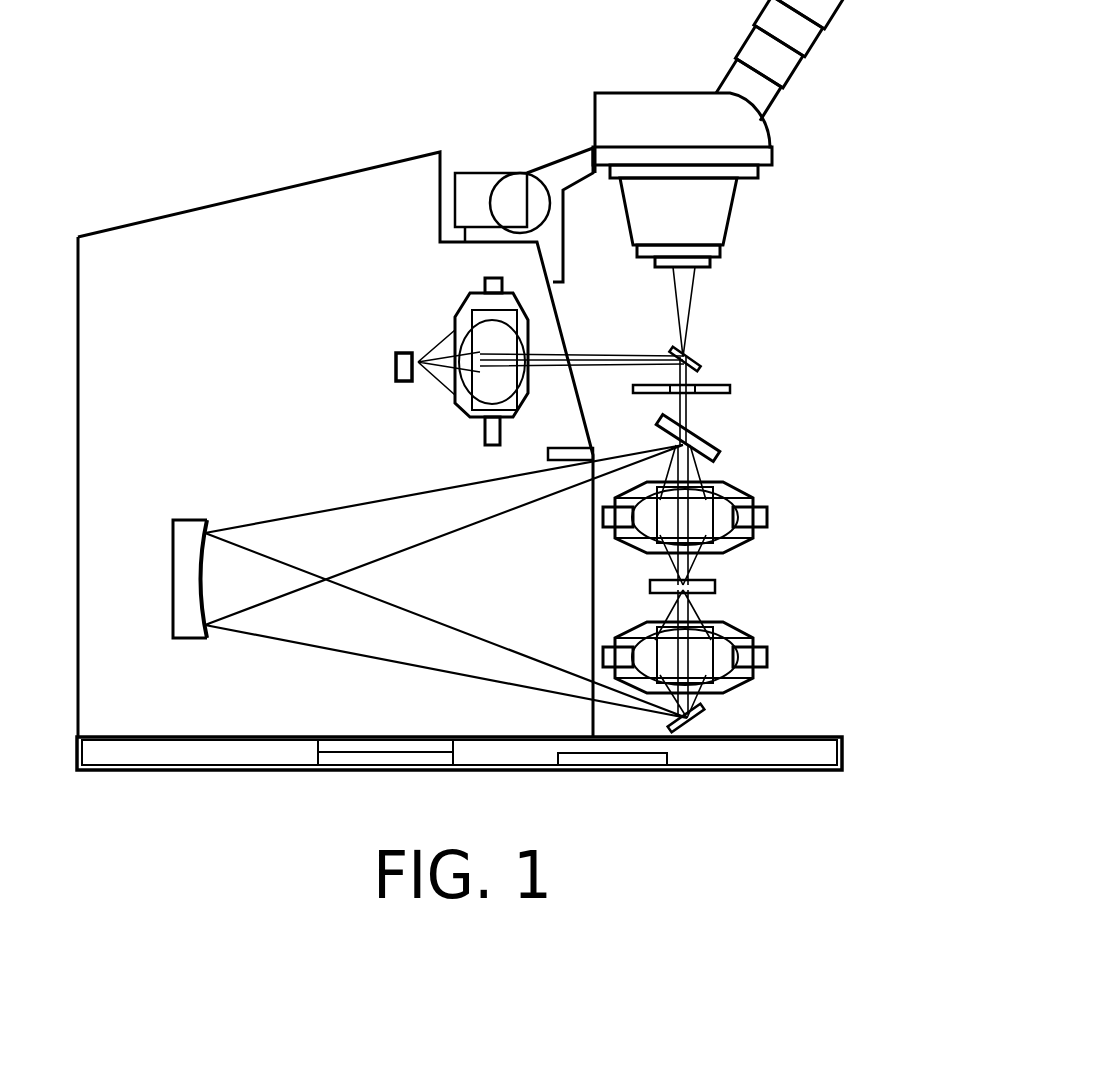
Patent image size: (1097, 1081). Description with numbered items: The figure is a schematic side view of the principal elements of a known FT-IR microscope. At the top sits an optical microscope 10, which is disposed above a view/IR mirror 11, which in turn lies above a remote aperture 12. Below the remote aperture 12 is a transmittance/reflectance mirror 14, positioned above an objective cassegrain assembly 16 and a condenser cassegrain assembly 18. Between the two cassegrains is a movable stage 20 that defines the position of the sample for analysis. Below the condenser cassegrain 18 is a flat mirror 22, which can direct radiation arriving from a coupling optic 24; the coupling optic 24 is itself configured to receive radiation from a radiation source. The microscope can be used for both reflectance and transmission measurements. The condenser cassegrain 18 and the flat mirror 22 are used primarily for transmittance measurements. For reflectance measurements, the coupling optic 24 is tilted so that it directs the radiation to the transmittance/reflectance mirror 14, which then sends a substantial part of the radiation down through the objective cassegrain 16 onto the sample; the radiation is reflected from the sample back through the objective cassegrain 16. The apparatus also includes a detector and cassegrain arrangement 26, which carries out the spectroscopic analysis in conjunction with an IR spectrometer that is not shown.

The optical microscope 10 is at (733, 217).
The view/IR mirror 11 is at (697, 357).
The remote aperture 12 is at (730, 389).
The transmittance/reflectance mirror 14 is at (718, 436).
The objective cassegrain assembly 16 is at (755, 545).
The condenser cassegrain assembly 18 is at (738, 688).
The movable stage 20 is at (715, 587).
The flat mirror 22 is at (690, 727).
The coupling optic 24 is at (173, 578).
The detector and cassegrain arrangement 26 is at (429, 336).